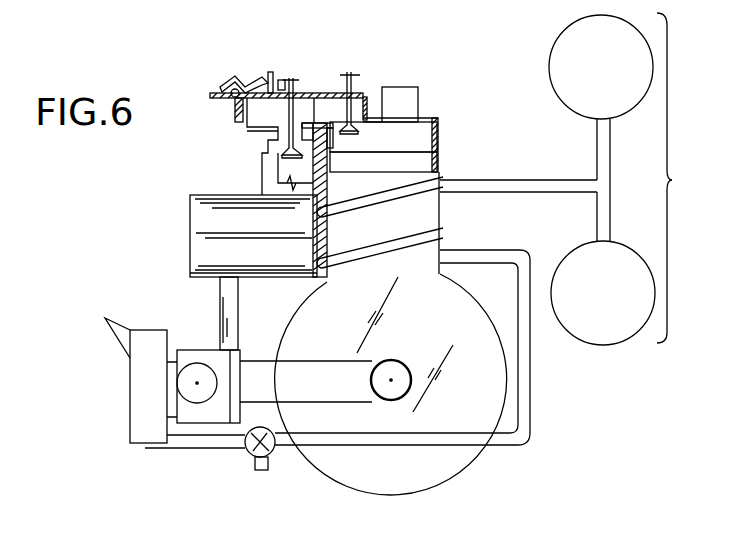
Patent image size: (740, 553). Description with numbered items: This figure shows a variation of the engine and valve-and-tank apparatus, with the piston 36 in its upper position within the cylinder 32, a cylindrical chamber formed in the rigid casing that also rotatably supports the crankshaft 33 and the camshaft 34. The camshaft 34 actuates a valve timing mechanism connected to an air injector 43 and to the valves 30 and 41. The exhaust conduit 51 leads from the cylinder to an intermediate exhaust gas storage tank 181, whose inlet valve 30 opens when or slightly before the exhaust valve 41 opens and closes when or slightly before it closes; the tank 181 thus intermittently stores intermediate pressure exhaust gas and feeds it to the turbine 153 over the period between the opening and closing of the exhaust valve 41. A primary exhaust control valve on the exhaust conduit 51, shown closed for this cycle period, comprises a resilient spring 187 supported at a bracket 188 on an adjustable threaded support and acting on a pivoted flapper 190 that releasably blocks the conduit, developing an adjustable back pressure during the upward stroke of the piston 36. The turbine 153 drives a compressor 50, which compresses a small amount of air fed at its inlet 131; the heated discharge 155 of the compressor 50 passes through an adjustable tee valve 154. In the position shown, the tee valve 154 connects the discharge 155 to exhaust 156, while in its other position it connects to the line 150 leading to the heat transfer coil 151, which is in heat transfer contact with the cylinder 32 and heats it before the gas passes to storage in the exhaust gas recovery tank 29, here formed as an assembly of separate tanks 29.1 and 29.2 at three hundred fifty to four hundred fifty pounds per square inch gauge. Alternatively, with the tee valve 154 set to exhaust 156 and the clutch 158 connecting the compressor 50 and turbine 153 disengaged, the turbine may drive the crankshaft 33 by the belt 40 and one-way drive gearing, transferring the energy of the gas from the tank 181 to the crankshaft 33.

The exhaust gas recovery tank 29 is at (576, 194).
The tank 29.1 is at (583, 48).
The tank 29.2 is at (613, 318).
The valve 30 is at (287, 162).
The cylinder 32 is at (417, 137).
The crankshaft 33 is at (391, 366).
The camshaft 34 is at (470, 397).
The piston 36 is at (437, 167).
The belt 40 is at (313, 360).
The exhaust valve 41 is at (362, 92).
The air injector 43 is at (418, 106).
The compressor 50 is at (143, 395).
The exhaust conduit 51 is at (313, 110).
The inlet 131 is at (122, 305).
The line 150 is at (520, 440).
The heat transfer coil 151 is at (477, 203).
The turbine 153 is at (210, 360).
The adjustable tee valve 154 is at (248, 458).
The discharge 155 is at (204, 452).
The exhaust 156 is at (266, 470).
The clutch 158 is at (173, 407).
The intermediate exhaust gas storage tank 181 is at (212, 222).
The resilient spring 187 is at (240, 80).
The bracket 188 is at (271, 72).
The pivoted flapper 190 is at (233, 108).